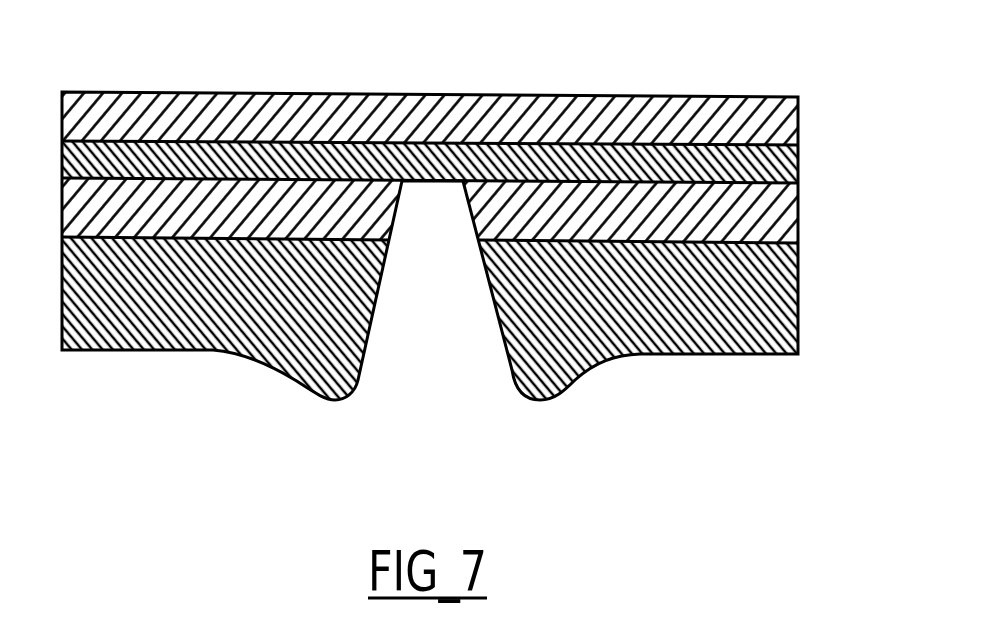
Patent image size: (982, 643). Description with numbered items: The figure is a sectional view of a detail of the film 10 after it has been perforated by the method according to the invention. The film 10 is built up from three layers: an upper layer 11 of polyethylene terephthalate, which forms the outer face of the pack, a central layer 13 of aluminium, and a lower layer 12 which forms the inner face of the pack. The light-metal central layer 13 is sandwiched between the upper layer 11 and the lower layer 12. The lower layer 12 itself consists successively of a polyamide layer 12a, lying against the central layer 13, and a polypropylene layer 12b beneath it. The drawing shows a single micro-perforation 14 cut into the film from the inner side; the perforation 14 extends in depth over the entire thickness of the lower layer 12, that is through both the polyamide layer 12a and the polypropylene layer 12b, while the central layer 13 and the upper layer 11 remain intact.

The film 10 is at (810, 170).
The upper layer 11 is at (460, 96).
The lower layer 12 is at (812, 227).
The polyamide layer 12a is at (623, 213).
The polypropylene layer 12b is at (613, 347).
The central layer 13 is at (517, 163).
The micro-perforation 14 is at (433, 332).